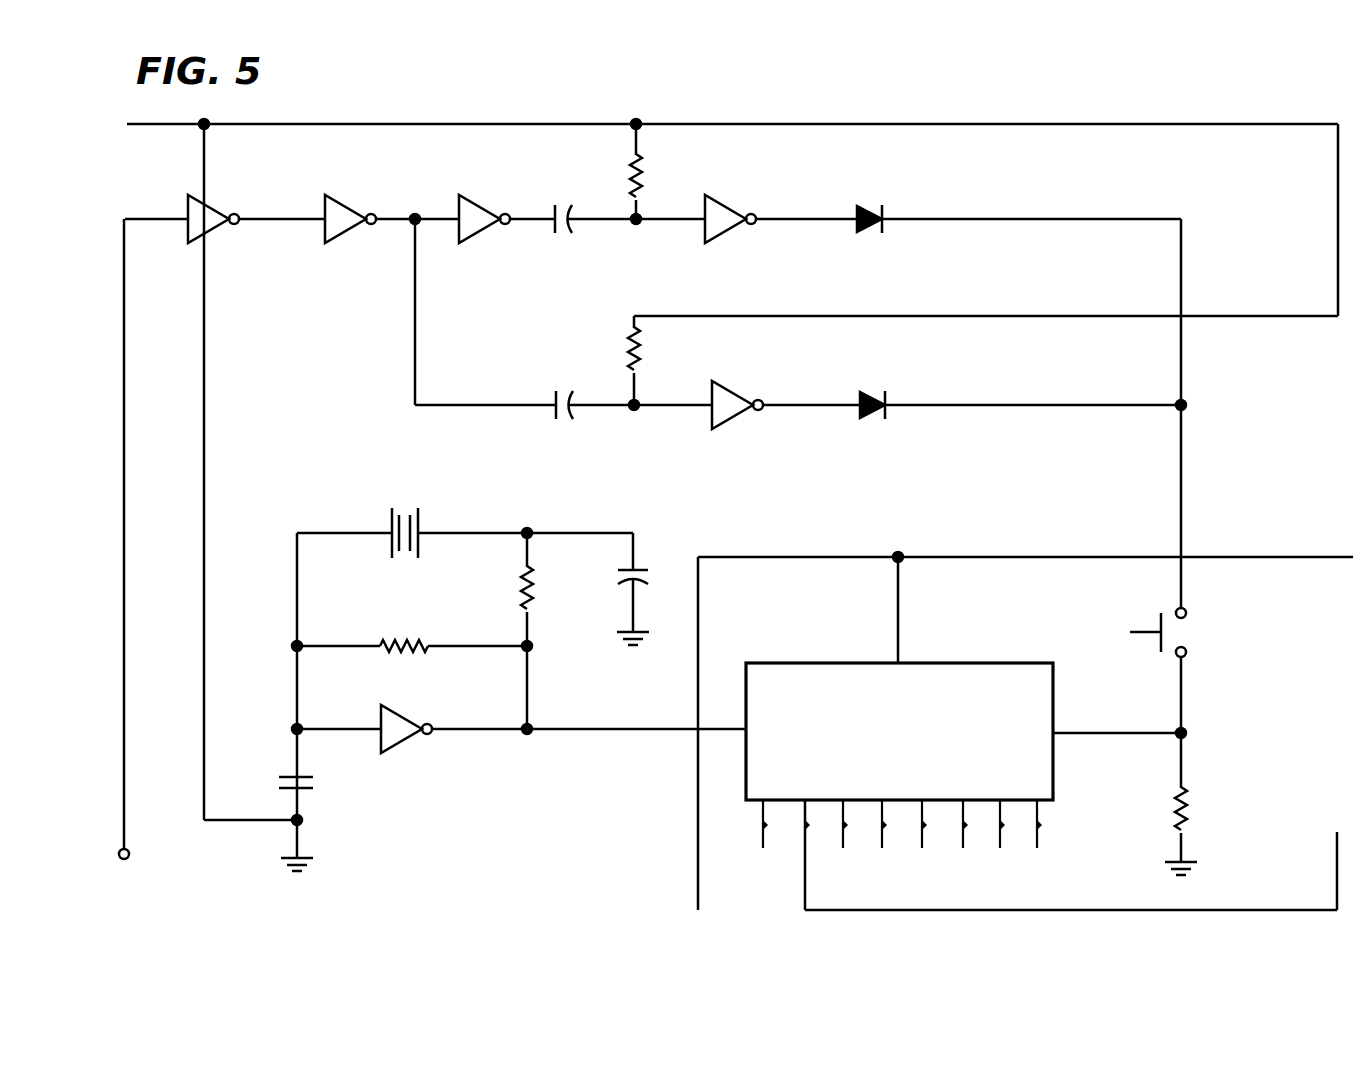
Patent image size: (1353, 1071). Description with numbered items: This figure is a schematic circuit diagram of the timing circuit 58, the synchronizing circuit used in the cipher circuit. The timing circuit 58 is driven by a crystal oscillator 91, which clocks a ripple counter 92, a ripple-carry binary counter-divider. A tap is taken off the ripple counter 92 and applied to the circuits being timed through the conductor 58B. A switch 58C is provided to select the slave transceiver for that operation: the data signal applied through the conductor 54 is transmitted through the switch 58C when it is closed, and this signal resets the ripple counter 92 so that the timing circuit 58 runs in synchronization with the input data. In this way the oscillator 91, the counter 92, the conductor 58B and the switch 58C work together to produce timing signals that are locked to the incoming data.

The timing circuit 58 is at (986, 102).
The conductor 54 is at (124, 818).
The crystal oscillator 91 is at (547, 523).
The ripple counter 92 is at (977, 681).
The conductor 58B is at (1135, 910).
The switch 58C is at (1190, 638).